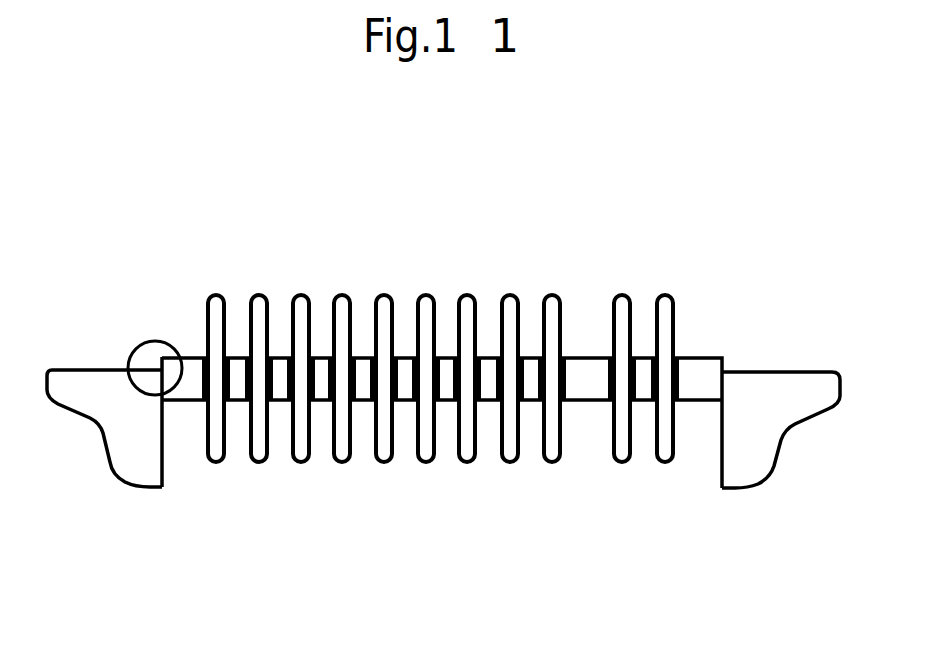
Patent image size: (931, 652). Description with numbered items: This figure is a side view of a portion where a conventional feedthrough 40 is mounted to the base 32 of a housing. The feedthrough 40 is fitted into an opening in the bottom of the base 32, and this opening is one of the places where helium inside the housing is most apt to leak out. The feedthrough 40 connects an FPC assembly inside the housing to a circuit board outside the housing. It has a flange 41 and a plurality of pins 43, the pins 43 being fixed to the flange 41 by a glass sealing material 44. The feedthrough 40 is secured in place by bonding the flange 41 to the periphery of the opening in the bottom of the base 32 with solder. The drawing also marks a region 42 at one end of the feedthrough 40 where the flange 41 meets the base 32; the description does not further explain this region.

The base 32 is at (783, 372).
The feedthrough 40 is at (343, 273).
The flange 41 is at (704, 358).
The end portion 42 is at (134, 344).
The pins 43 is at (664, 297).
The glass sealing material 44 is at (612, 357).